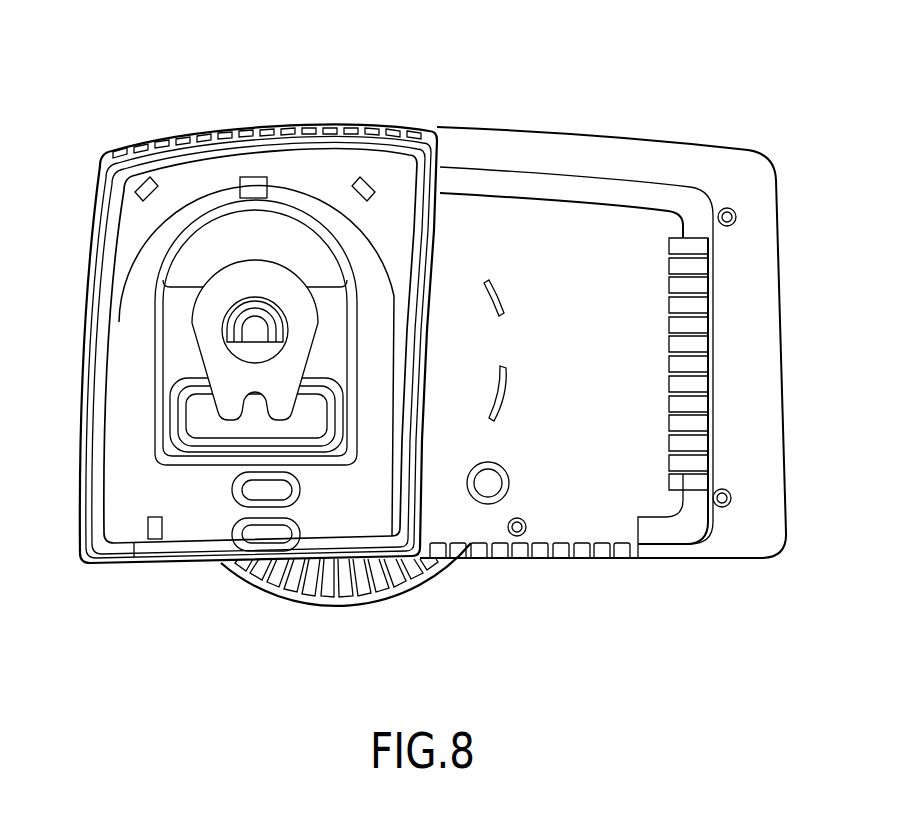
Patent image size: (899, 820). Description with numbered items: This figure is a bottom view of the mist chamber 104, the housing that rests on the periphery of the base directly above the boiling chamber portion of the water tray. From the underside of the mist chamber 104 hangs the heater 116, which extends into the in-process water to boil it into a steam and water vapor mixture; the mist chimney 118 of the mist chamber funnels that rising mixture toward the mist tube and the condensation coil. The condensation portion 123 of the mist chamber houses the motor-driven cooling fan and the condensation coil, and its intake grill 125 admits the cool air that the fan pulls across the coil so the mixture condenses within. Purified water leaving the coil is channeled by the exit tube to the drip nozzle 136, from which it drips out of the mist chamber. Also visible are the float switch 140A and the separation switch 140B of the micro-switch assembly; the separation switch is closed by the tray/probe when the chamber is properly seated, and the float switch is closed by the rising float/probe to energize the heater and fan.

The mist chamber 104 is at (547, 104).
The intake grill 125 is at (258, 126).
The mist chimney 118 is at (202, 254).
The heater 116 is at (200, 333).
The float switch 140A is at (250, 533).
The separation switch 140B is at (252, 490).
The drip nozzle 136 is at (480, 507).
The condensation portion 123 is at (560, 567).